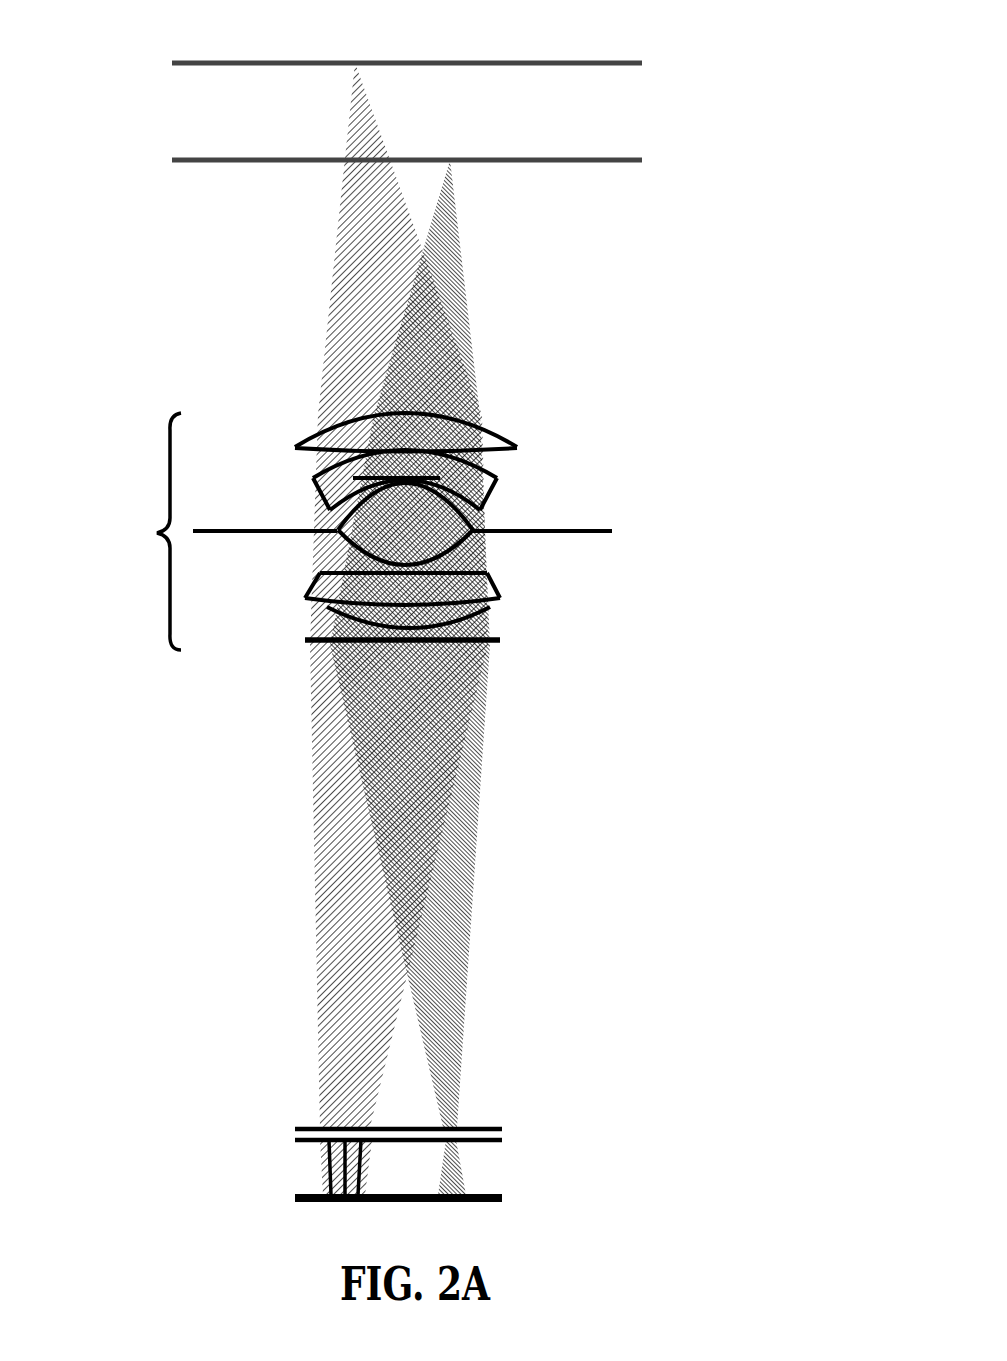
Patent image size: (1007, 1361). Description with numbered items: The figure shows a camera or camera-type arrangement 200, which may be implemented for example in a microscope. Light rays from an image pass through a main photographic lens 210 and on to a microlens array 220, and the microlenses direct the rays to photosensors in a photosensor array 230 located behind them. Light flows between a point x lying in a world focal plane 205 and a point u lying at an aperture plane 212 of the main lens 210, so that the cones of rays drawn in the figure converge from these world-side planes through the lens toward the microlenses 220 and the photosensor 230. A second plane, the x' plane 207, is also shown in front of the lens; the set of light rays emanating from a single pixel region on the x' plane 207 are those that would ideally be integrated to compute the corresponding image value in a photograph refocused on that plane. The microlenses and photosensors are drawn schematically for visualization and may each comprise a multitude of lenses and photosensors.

The camera-type arrangement 200 is at (789, 33).
The world focal plane 205 is at (172, 63).
The x' plane 207 is at (172, 160).
The main photographic lens 210 is at (289, 531).
The aperture plane 212 is at (748, 519).
The microlens array 220 is at (282, 1129).
The photosensor array 230 is at (282, 1198).